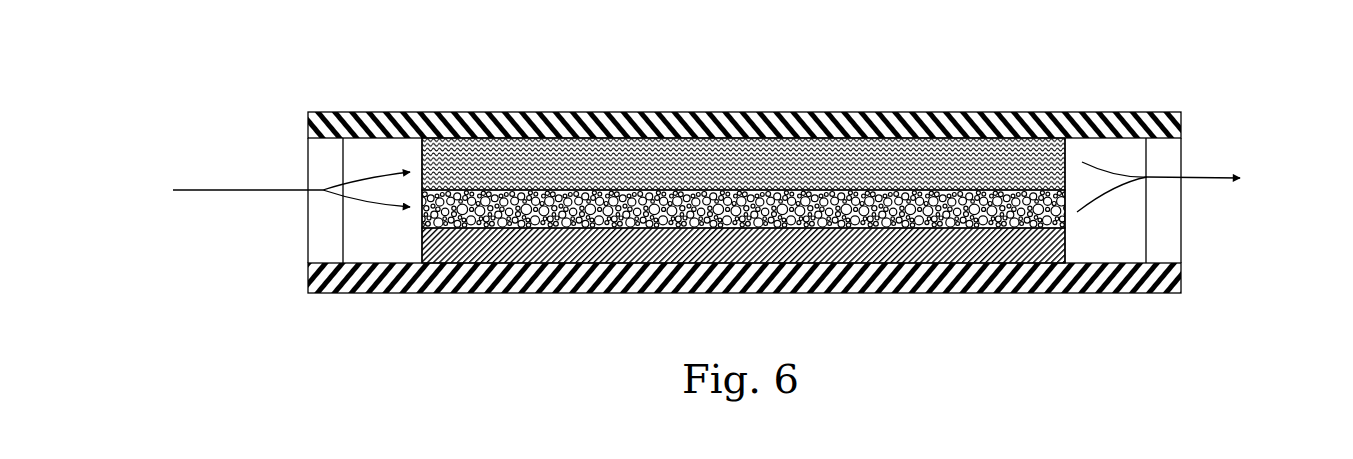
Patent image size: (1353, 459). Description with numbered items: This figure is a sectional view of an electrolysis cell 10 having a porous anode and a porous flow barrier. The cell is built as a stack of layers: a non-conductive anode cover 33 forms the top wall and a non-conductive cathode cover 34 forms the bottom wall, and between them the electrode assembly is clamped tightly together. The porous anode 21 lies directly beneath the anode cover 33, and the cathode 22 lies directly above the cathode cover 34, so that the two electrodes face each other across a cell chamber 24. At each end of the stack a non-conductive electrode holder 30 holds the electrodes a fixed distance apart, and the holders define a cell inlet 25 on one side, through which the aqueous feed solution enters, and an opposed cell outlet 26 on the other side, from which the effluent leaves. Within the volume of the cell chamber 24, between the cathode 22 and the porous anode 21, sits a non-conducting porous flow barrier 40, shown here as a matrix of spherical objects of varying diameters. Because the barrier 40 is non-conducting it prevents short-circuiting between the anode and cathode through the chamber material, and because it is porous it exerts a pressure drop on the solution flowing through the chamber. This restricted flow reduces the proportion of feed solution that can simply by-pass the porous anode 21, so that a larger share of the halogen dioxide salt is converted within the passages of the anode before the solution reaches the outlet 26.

The electrolysis cell 10 is at (743, 198).
The anode 21 is at (603, 147).
The cathode 22 is at (543, 240).
The cell chamber 24 is at (923, 198).
The cell inlet 25 is at (353, 172).
The cell outlet 26 is at (1115, 152).
The electrode holder 30 is at (377, 232).
The anode cover 33 is at (457, 93).
The cathode cover 34 is at (478, 278).
The porous flow barrier 40 is at (800, 197).